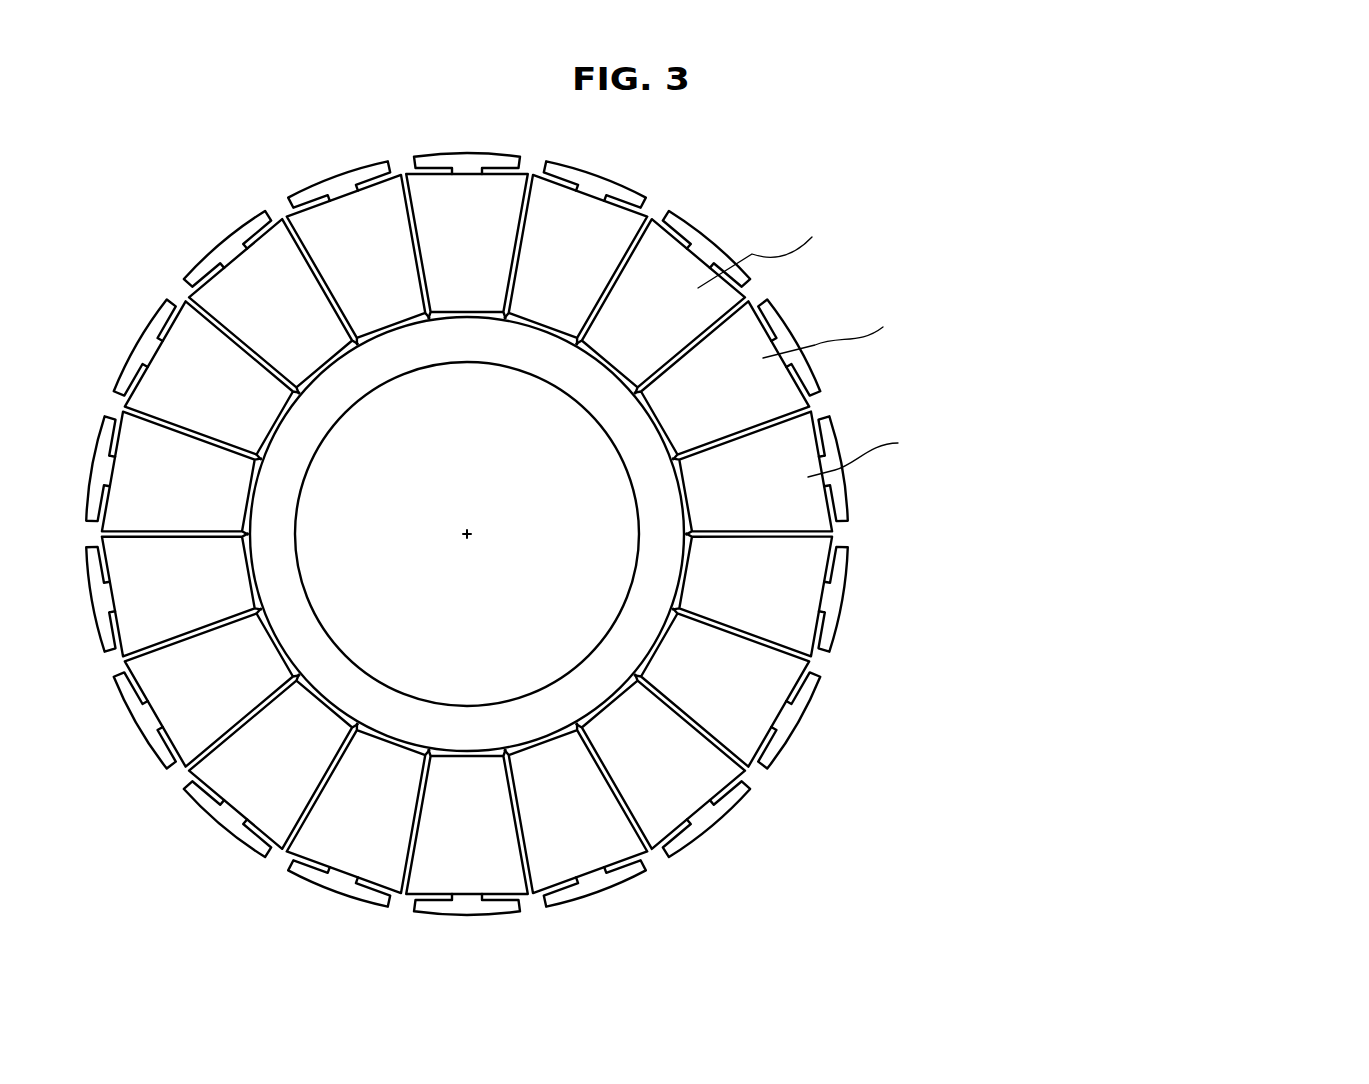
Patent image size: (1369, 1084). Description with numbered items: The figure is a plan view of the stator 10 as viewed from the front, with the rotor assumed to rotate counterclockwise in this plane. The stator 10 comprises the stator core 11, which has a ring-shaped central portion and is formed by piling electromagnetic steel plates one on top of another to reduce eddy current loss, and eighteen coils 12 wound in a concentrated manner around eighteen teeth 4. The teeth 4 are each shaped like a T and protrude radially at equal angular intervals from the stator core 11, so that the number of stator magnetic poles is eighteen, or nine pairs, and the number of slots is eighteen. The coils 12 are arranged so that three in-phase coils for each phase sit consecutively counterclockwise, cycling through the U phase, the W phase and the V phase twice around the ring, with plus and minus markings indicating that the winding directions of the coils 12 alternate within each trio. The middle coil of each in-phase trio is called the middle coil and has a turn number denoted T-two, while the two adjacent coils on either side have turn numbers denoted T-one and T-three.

The teeth 4 is at (333, 188).
The stator 10 is at (790, 826).
The stator core 11 is at (665, 573).
The coils 12 is at (777, 693).